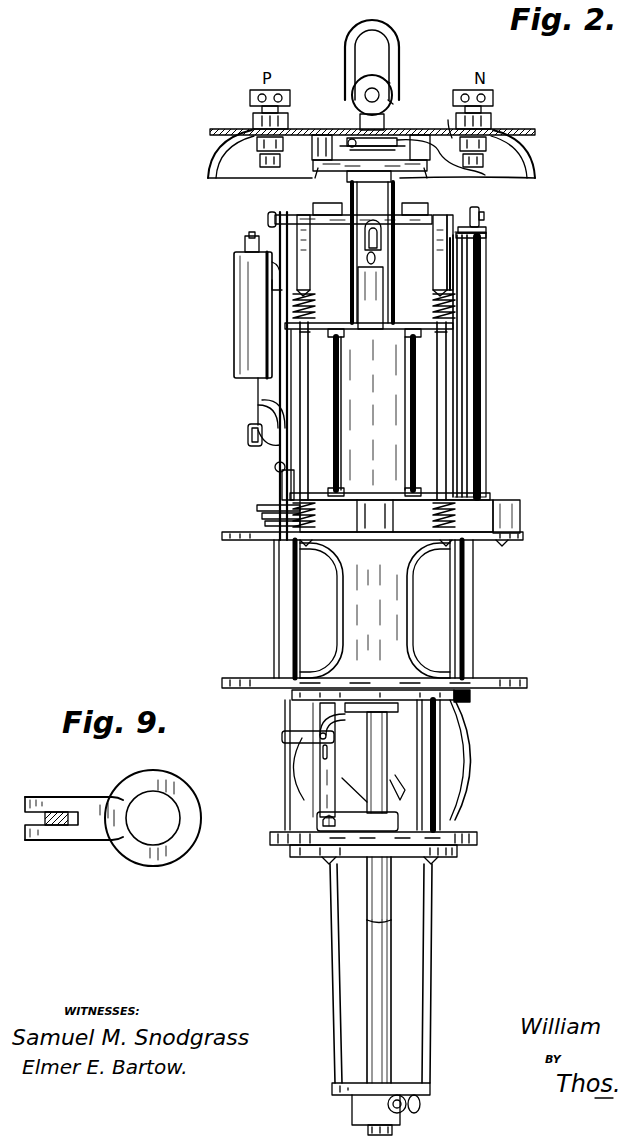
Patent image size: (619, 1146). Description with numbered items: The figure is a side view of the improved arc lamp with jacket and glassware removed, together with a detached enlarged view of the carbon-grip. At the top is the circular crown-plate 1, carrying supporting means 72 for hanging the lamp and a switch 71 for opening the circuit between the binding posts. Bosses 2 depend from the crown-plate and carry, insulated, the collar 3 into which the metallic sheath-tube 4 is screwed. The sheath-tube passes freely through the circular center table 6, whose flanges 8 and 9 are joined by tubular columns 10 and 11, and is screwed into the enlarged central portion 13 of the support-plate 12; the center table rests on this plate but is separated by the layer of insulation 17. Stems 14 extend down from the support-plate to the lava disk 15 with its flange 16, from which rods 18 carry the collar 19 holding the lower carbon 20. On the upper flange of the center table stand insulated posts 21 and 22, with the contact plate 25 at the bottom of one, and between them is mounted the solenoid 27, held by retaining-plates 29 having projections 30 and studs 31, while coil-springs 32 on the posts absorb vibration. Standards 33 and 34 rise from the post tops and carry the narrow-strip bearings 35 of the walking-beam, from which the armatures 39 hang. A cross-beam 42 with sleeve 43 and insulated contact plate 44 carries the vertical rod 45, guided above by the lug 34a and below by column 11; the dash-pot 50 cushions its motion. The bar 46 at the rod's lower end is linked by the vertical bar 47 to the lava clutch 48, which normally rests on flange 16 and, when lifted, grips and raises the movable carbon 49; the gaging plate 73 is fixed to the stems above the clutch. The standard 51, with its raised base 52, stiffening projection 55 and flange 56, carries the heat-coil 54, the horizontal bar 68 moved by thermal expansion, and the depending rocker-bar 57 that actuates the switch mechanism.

In FIG. 2, the crown-plate 1 is at (526, 140).
In FIG. 2, the bosses 2 is at (312, 155).
In FIG. 2, the collar 3 is at (432, 190).
In FIG. 2, the sheath-tube 4 is at (352, 272).
In FIG. 2, the center table 6 is at (405, 593).
In FIG. 2, the flange 8 is at (240, 540).
In FIG. 2, the flange 9 is at (242, 680).
In FIG. 2, the tubular column 10 is at (474, 602).
In FIG. 2, the tubular column 11 is at (274, 595).
In FIG. 2, the support-plate 12 is at (465, 705).
In FIG. 2, the enlarged central portion 13 is at (400, 712).
In FIG. 2, the stems 14 is at (442, 778).
In FIG. 2, the disk 15 is at (472, 832).
In FIG. 2, the flange 16 is at (460, 860).
In FIG. 2, the layer of insulation 17 is at (470, 698).
In FIG. 2, the rods 18 is at (330, 930).
In FIG. 2, the collar 19 is at (362, 1104).
In FIG. 2, the lower carbon 20 is at (372, 985).
In FIG. 2, the post 21 is at (444, 378).
In FIG. 2, the post 22 is at (300, 485).
In FIG. 2, the contact plate 25 is at (285, 525).
In FIG. 2, the solenoid 27 is at (373, 413).
In FIG. 2, the retaining-plates 29 is at (402, 325).
In FIG. 2, the transversely extending projections 30 is at (282, 330).
In FIG. 2, the studs 31 is at (418, 340).
In FIG. 2, the coil-springs 32 is at (312, 305).
In FIG. 2, the standard 33 is at (433, 240).
In FIG. 2, the standard 34 is at (308, 250).
In FIG. 2, the lug 34a is at (274, 287).
In FIG. 2, the narrow-strip bearings 35 is at (290, 215).
In FIG. 2, the armatures 39 is at (455, 265).
In FIG. 2, the cross-beam 42 is at (275, 469).
In FIG. 2, the sleeve 43 is at (287, 499).
In FIG. 2, the contact plate 44 is at (275, 513).
In FIG. 2, the vertical rod 45 is at (275, 440).
In FIG. 2, the bar 46 is at (272, 765).
In FIG. 2, the vertical bar 47 is at (322, 797).
In FIG. 2, the clutch 48 is at (357, 821).
In FIG. 9, the clutch 48 is at (103, 842).
In FIG. 2, the movable carbon 49 is at (372, 870).
In FIG. 2, the dash-pot 50 is at (236, 300).
In FIG. 2, the standard 51 is at (456, 345).
In FIG. 2, the base portion 52 is at (492, 500).
In FIG. 2, the heat-coil 54 is at (487, 415).
In FIG. 2, the projection 55 is at (452, 283).
In FIG. 2, the flange 56 is at (485, 220).
In FIG. 2, the rocker-bar 57 is at (488, 230).
In FIG. 2, the horizontal bar 68 is at (488, 237).
In FIG. 2, the switch 71 is at (447, 130).
In FIG. 2, the supporting means 72 is at (384, 90).
In FIG. 2, the plate 73 is at (460, 796).